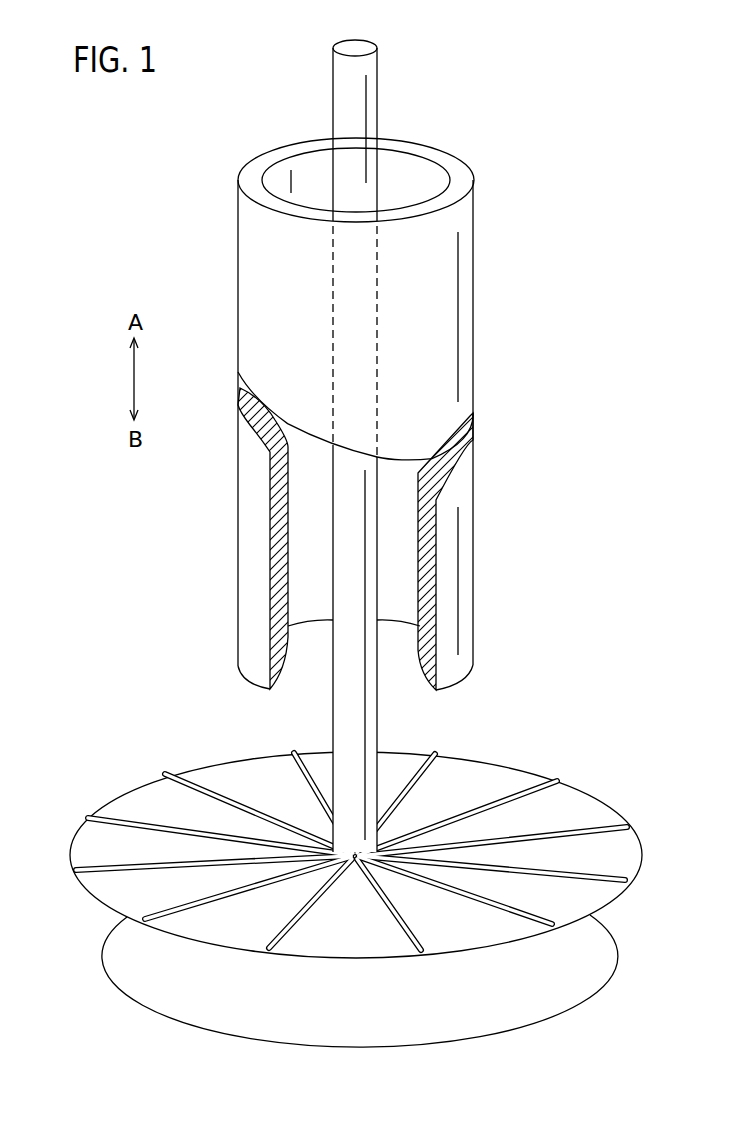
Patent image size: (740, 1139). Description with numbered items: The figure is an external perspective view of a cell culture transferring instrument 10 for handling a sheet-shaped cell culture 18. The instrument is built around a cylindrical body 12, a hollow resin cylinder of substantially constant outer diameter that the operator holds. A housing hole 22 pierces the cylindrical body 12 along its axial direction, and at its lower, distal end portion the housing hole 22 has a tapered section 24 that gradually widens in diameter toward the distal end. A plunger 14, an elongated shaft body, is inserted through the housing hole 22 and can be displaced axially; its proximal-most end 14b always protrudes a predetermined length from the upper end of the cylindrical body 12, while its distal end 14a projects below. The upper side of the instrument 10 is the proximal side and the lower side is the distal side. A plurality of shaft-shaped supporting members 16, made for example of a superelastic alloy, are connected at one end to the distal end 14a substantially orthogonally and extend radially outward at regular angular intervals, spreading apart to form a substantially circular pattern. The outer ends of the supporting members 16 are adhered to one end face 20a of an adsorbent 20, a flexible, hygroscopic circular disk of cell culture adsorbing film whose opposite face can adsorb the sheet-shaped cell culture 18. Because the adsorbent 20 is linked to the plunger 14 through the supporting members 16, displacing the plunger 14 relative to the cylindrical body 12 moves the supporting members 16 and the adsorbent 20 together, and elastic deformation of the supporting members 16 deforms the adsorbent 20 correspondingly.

The cell culture transferring instrument 10 is at (581, 140).
The cylindrical body 12 is at (442, 267).
The plunger 14 is at (349, 480).
The distal end of the plunger 14a is at (359, 860).
The proximal-most end of the plunger 14b is at (361, 45).
The supporting members 16 is at (545, 835).
The sheet-shaped cell culture 18 is at (350, 1048).
The adsorbent 20 is at (108, 893).
The one end face of the adsorbent 20a is at (623, 852).
The housing hole 22 is at (306, 608).
The tapered section 24 is at (412, 650).